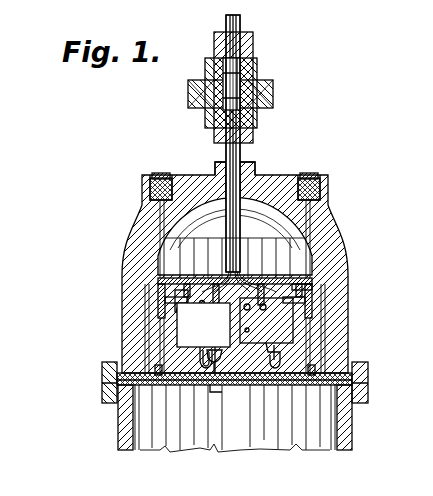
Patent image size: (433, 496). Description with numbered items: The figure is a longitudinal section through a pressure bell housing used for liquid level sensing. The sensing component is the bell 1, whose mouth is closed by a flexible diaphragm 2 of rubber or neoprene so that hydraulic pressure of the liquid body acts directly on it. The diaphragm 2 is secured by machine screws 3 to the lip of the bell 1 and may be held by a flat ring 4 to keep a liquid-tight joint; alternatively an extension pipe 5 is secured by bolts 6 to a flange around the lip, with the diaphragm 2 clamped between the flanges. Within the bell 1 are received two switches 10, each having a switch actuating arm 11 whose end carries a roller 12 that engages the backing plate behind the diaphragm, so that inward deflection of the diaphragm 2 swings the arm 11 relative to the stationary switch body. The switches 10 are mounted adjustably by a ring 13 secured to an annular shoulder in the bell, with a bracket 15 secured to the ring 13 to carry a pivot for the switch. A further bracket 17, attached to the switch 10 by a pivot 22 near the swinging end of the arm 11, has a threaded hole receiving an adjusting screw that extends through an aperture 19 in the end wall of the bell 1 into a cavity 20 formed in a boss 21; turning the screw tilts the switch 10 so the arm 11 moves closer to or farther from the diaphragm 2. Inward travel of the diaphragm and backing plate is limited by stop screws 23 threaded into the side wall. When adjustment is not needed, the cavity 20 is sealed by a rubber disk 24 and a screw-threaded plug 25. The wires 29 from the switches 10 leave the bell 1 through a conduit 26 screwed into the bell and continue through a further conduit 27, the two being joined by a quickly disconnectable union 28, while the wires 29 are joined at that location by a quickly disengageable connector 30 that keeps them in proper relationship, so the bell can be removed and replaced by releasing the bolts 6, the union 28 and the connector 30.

The bell 1 is at (333, 250).
The flexible diaphragm 2 is at (240, 385).
The machine screws 3 is at (106, 281).
The flat ring 4 is at (267, 396).
The extension pipe 5 is at (352, 436).
The bolts 6 is at (103, 373).
The switch 10 is at (222, 329).
The switch actuating arm 11 is at (199, 354).
The roller 12 is at (272, 358).
The ring 13 is at (258, 282).
The bracket 15 is at (199, 268).
The bracket 17 is at (162, 296).
The aperture 19 is at (158, 222).
The cavity 20 is at (152, 178).
The boss 21 is at (170, 175).
The pivot 22 is at (176, 313).
The stop screws 23 is at (215, 388).
The rubber disks 24 is at (320, 178).
The screw-threaded plugs 25 is at (307, 176).
The conduit 26 is at (255, 165).
The further conduit 27 is at (252, 50).
The union 28 is at (273, 96).
The wires 29 is at (224, 157).
The connector 30 is at (216, 70).